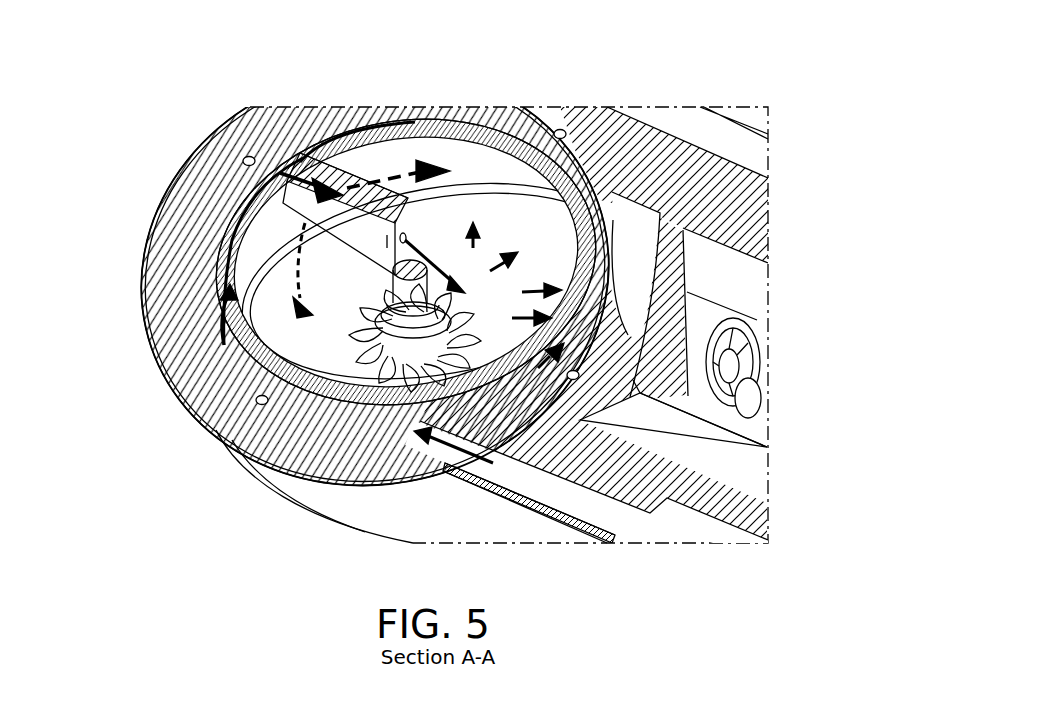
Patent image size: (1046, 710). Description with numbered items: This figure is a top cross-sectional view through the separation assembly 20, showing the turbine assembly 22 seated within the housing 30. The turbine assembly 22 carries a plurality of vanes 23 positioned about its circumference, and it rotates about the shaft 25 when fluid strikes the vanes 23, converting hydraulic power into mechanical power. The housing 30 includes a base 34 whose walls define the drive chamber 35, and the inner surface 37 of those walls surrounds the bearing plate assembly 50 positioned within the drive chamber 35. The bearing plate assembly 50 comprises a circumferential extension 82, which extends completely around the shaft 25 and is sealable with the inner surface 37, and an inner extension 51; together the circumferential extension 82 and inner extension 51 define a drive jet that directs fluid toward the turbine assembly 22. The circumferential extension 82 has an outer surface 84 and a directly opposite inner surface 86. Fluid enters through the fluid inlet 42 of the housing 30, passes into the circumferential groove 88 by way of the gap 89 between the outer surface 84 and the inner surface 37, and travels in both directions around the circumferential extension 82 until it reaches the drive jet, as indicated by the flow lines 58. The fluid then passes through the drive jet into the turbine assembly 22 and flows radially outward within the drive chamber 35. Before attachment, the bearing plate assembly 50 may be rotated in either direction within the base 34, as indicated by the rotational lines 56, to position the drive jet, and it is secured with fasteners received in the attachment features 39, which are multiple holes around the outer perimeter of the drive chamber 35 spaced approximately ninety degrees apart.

The separation assembly 20 is at (802, 106).
The turbine assembly 22 is at (395, 405).
The vanes 23 is at (458, 395).
The shaft 25 is at (406, 234).
The housing 30 is at (287, 520).
The base 34 is at (257, 484).
The drive chamber 35 is at (247, 372).
The inner surface 37 is at (527, 122).
The attachment features 39 is at (245, 158).
The fluid inlet 42 is at (553, 482).
The bearing plate assembly 50 is at (236, 223).
The inner extension 51 is at (348, 168).
The rotational lines 56 is at (383, 170).
The flow lines 58 is at (415, 188).
The circumferential extension 82 is at (224, 278).
The outer surface 84 is at (500, 128).
The inner surface 86 is at (480, 140).
The circumferential groove 88 is at (628, 262).
The gap 89 is at (588, 188).